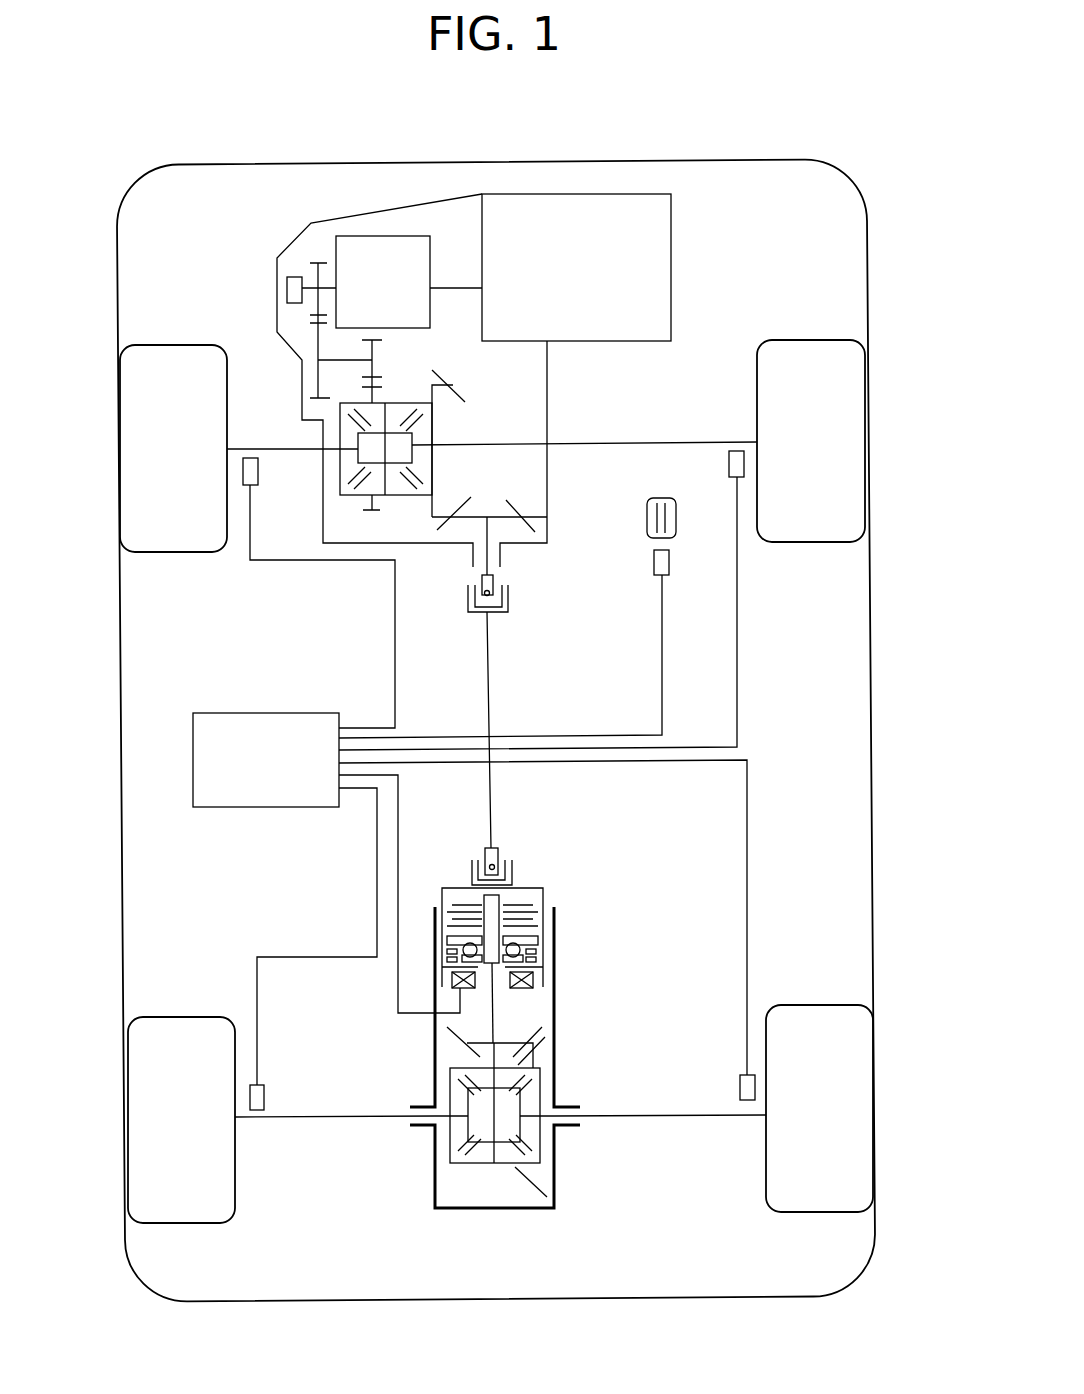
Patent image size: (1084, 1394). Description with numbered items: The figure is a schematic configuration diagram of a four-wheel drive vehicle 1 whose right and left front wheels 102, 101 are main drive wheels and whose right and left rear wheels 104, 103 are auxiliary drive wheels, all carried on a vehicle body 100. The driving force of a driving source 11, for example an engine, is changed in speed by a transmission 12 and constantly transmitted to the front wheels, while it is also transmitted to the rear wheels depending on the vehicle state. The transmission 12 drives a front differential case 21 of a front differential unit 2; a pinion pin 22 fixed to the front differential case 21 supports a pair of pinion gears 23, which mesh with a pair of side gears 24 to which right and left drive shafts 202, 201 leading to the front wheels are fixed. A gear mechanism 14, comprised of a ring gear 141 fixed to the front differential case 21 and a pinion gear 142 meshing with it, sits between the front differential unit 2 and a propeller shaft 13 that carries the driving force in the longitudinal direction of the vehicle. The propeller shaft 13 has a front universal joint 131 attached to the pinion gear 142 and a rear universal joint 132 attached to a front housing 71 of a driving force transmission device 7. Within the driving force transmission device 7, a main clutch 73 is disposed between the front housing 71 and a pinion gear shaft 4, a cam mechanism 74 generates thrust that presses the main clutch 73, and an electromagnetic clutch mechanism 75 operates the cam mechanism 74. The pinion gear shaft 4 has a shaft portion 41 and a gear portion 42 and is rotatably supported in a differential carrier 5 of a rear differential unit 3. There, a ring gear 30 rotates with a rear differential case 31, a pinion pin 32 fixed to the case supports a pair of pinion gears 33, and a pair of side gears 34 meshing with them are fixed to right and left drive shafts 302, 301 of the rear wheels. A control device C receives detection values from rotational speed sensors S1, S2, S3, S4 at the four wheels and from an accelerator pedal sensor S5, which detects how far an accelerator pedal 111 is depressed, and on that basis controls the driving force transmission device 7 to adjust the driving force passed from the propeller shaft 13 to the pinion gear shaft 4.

The four-wheel drive vehicle 1 is at (785, 102).
The vehicle body 100 is at (240, 161).
The left front wheel 101 is at (133, 420).
The right front wheel 102 is at (853, 412).
The left rear wheel 103 is at (142, 1145).
The right rear wheel 104 is at (863, 1133).
The driving source 11 is at (612, 193).
The transmission 12 is at (372, 234).
The propeller shaft 13 is at (456, 626).
The front universal joint 131 is at (508, 597).
The rear universal joint 132 is at (509, 862).
The gear mechanism 14 is at (533, 489).
The ring gear 141 is at (452, 387).
The pinion gear 142 is at (527, 520).
The front differential unit 2 is at (347, 511).
The front differential case 21 is at (405, 402).
The pinion pin 22 is at (387, 453).
The pinion gears 23 is at (388, 420).
The side gears 24 is at (413, 435).
The left drive shaft 201 is at (293, 447).
The right drive shaft 202 is at (600, 442).
The accelerator pedal 111 is at (662, 498).
The rotational speed sensor S1 is at (252, 457).
The rotational speed sensor S2 is at (735, 450).
The rotational speed sensor S3 is at (264, 1090).
The rotational speed sensor S4 is at (738, 1082).
The accelerator pedal sensor S5 is at (654, 570).
The control device C is at (235, 712).
The driving force transmission device 7 is at (549, 874).
The front housing 71 is at (452, 887).
The main clutch 73 is at (535, 905).
The cam mechanism 74 is at (550, 929).
The electromagnetic clutch mechanism 75 is at (552, 953).
The pinion gear shaft 4 is at (606, 962).
The shaft portion 41 is at (495, 1015).
The gear portion 42 is at (500, 1043).
The differential carrier 5 is at (555, 1068).
The rear differential unit 3 is at (418, 1207).
The ring gear 30 is at (537, 1053).
The rear differential case 31 is at (483, 1163).
The pinion pin 32 is at (497, 1115).
The pinion gears 33 is at (483, 1090).
The side gears 34 is at (520, 1105).
The left drive shaft 301 is at (362, 1118).
The right drive shaft 302 is at (695, 1113).